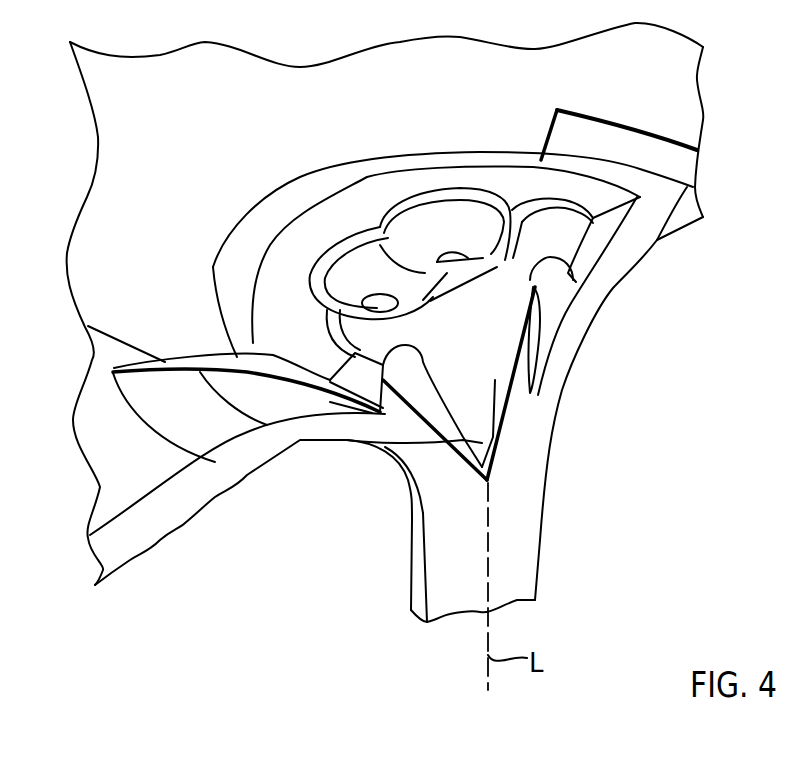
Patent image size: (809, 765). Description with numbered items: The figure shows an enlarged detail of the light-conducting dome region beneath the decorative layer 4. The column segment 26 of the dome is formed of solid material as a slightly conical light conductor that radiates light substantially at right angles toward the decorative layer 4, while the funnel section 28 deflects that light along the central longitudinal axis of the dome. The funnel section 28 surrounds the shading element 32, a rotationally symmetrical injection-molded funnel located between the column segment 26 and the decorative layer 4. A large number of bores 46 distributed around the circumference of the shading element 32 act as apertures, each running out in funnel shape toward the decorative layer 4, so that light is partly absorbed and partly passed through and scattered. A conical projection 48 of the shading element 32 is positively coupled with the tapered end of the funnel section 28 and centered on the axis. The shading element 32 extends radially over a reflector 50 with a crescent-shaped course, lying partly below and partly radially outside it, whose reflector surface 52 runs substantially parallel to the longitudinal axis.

The decorative layer 4 is at (495, 432).
The column segment 26 is at (557, 544).
The funnel section 28 is at (585, 405).
The shading element 32 is at (608, 243).
The bores 46 is at (407, 305).
The conical projection 48 is at (398, 473).
The reflector 50 is at (662, 163).
The reflector surface 52 is at (188, 356).